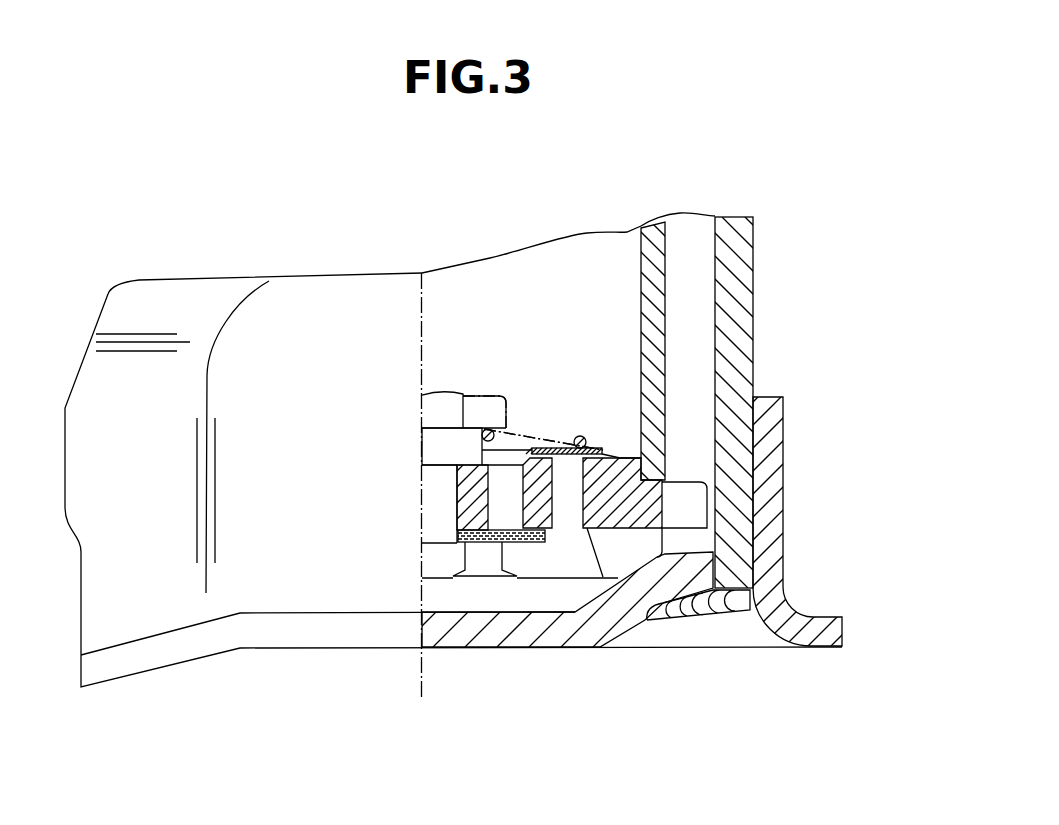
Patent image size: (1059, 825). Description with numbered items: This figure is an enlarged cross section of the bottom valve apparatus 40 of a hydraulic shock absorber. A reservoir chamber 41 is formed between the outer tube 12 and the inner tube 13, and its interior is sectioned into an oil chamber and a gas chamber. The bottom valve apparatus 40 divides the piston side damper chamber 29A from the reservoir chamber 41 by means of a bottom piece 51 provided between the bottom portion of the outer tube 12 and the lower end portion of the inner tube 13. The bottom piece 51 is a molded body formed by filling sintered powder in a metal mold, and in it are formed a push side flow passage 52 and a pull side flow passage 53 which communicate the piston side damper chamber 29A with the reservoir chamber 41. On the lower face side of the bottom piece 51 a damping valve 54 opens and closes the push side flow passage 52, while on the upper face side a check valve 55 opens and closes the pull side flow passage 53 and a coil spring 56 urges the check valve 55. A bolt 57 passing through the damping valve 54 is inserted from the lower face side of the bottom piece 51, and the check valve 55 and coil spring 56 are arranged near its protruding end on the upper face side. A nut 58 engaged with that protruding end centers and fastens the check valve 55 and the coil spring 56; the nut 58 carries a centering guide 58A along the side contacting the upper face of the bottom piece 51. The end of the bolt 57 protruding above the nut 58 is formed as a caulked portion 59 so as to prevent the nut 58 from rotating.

The outer tube 12 is at (738, 226).
The inner tube 13 is at (652, 232).
The reservoir chamber 41 is at (690, 226).
The piston side damper chamber 29A is at (537, 265).
The bottom valve apparatus 40 is at (546, 398).
The bottom piece 51 is at (688, 505).
The push side flow passage 52 is at (488, 490).
The pull side flow passage 53 is at (565, 507).
The damping valve 54 is at (513, 543).
The check valve 55 is at (600, 449).
The coil spring 56 is at (580, 437).
The bolt 57 is at (437, 563).
The nut 58 is at (483, 403).
The centering guide 58A is at (440, 452).
The caulked portion 59 is at (438, 392).